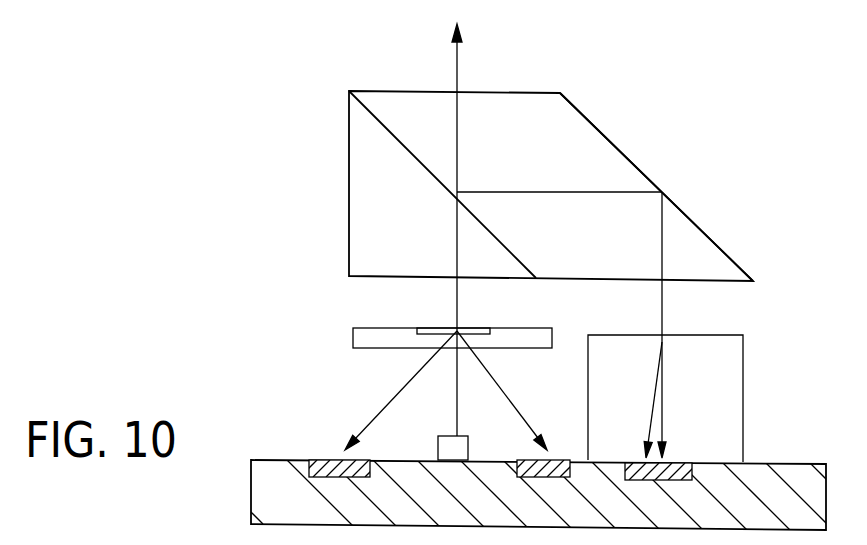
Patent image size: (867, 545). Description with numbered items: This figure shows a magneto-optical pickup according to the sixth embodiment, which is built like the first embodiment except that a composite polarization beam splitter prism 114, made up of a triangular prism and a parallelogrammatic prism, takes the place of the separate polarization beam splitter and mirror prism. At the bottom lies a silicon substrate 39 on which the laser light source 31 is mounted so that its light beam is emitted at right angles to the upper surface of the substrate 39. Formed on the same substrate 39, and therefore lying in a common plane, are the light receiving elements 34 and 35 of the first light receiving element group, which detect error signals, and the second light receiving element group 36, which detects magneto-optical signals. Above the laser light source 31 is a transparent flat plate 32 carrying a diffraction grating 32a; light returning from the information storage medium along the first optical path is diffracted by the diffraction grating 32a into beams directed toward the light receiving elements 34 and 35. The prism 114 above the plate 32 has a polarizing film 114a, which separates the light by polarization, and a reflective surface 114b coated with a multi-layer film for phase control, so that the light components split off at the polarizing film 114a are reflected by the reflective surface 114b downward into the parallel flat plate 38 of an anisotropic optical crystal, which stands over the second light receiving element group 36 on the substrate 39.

The composite polarization beam splitter prism 114 is at (348, 228).
The polarizing film 114a is at (393, 135).
The reflective surface 114b is at (622, 152).
The transparent flat plate 32 is at (353, 339).
The diffraction grating 32a is at (470, 328).
The laser light source 31 is at (440, 448).
The light receiving element 34 is at (328, 458).
The light receiving element 35 is at (557, 458).
The second light receiving element group 36 is at (680, 463).
The parallel flat plate 38 is at (745, 352).
The silicon substrate 39 is at (790, 468).